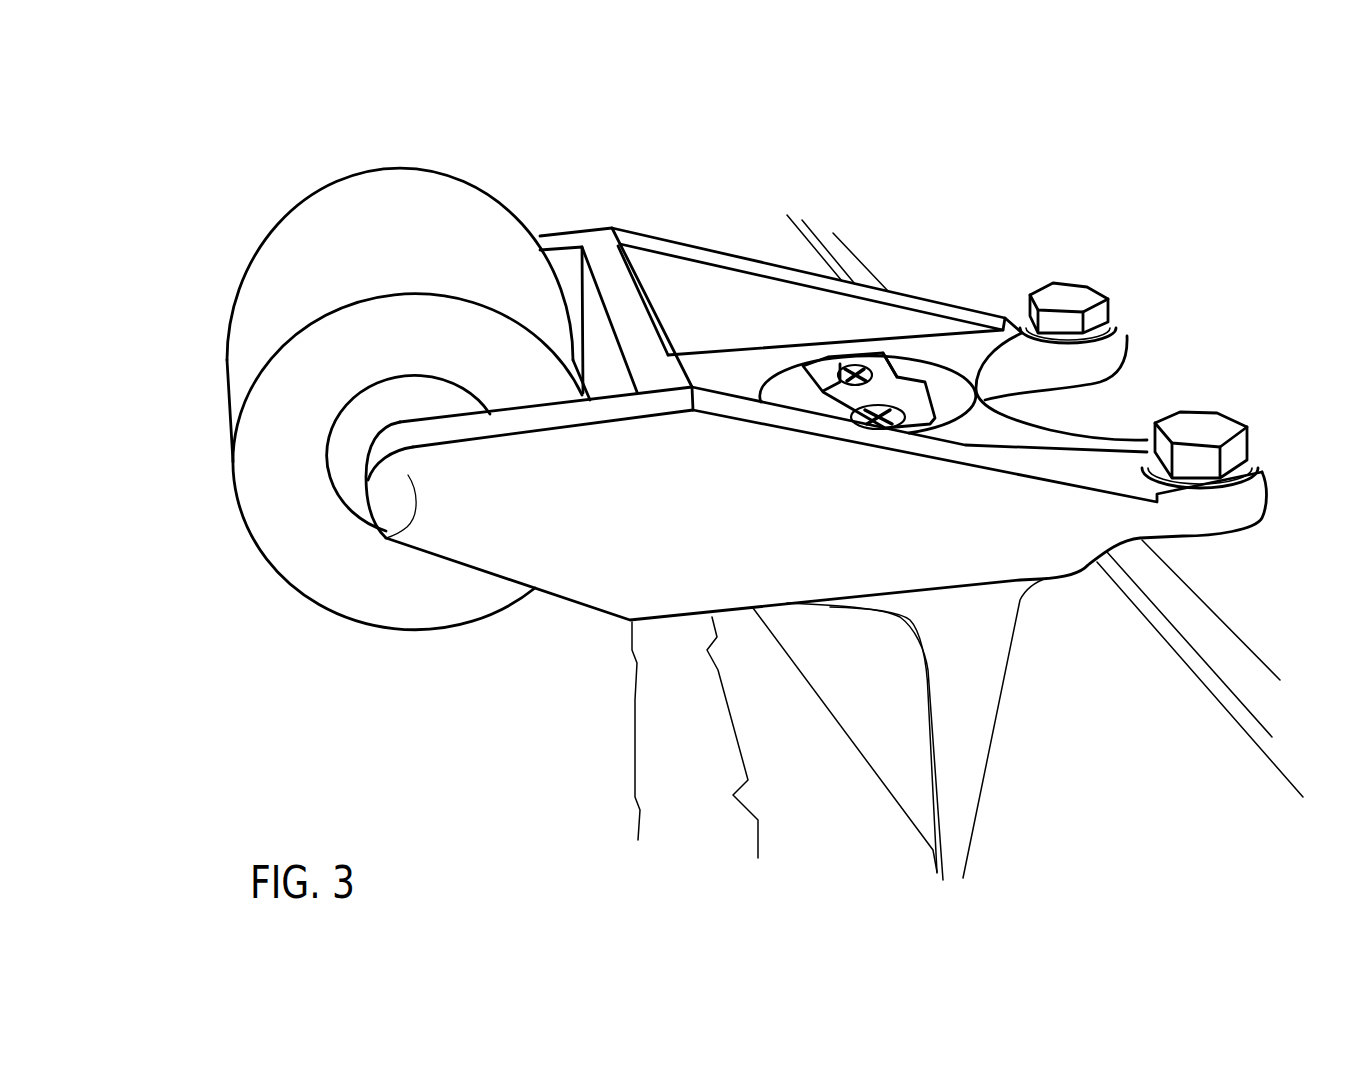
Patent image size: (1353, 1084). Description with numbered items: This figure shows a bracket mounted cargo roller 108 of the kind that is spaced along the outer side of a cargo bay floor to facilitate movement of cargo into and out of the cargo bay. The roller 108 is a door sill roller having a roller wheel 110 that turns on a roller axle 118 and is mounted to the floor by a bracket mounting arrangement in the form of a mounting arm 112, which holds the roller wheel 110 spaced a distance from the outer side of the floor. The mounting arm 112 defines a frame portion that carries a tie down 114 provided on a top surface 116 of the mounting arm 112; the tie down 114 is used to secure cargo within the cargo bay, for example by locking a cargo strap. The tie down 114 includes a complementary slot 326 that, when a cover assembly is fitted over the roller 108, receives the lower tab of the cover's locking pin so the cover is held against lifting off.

The roller 108 is at (232, 177).
The roller wheel 110 is at (330, 590).
The mounting arm 112 is at (1047, 547).
The tie down 114 is at (903, 363).
The top surface 116 is at (1117, 455).
The roller axle 118 is at (382, 538).
The complementary slot 326 is at (843, 345).